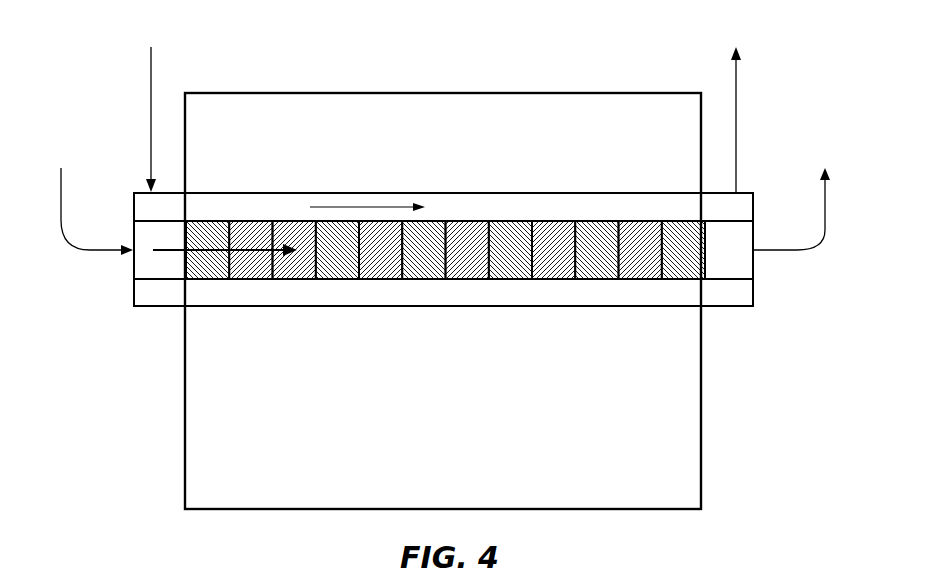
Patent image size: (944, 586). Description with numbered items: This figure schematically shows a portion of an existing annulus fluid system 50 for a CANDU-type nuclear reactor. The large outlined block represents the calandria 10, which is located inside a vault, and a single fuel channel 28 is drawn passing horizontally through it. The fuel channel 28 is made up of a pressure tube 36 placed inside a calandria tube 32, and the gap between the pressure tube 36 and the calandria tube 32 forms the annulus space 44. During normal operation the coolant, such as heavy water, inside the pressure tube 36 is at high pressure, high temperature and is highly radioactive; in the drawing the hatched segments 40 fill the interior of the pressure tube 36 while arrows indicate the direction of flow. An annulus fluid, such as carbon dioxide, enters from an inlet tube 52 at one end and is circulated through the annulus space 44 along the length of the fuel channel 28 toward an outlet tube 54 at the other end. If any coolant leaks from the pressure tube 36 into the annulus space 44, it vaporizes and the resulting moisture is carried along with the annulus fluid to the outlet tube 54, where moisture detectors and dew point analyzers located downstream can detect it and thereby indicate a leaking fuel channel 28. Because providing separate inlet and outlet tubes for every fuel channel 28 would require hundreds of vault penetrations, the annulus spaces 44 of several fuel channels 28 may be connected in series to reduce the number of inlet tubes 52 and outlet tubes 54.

The calandria 10 is at (457, 100).
The fuel channel 28 is at (161, 316).
The calandria tube 32 is at (225, 308).
The pressure tube 36 is at (305, 280).
The material segments 40 is at (553, 268).
The annulus space 44 is at (438, 293).
The annulus fluid system 50 is at (446, 263).
The inlet tube 52 is at (149, 91).
The outlet tube 54 is at (739, 98).